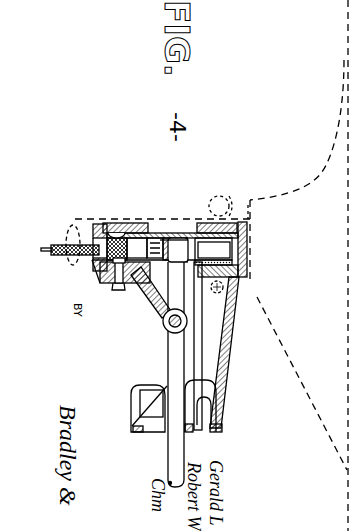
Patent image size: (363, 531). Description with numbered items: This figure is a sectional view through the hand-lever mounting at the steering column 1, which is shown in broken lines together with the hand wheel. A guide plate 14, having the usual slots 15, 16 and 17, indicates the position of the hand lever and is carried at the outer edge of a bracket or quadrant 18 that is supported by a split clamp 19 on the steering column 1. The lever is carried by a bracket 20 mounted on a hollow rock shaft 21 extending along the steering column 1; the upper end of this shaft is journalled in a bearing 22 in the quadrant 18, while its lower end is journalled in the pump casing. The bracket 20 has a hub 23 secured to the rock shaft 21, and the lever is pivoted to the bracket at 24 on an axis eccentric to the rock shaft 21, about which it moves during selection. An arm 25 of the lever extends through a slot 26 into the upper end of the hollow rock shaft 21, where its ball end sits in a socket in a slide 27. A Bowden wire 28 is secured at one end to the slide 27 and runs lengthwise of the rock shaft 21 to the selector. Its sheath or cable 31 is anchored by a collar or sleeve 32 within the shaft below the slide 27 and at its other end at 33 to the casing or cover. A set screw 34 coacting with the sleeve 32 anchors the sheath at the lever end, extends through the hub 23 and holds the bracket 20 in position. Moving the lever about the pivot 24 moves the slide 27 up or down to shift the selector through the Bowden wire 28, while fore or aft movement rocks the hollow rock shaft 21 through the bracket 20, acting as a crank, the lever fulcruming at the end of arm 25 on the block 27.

The steering column 1 is at (92, 220).
The guide plate 14 is at (218, 432).
The slot 15 is at (152, 338).
The slot 16 is at (207, 405).
The slot 17 is at (131, 396).
The bracket or quadrant 18 is at (233, 335).
The split clamp 19 is at (229, 205).
The bracket 20 is at (170, 458).
The hollow rock shaft 21 is at (93, 265).
The bearing 22 is at (212, 222).
The hub 23 is at (117, 222).
The pivot 24 is at (133, 304).
The arm 25 is at (189, 319).
The slot 26 is at (184, 262).
The slide 27 is at (155, 236).
The Bowden wire 28 is at (50, 244).
The sheath or cable 31 is at (61, 245).
The collar or sleeve 32 is at (106, 272).
The anchorage 33 is at (116, 276).
The set screw 34 is at (118, 291).